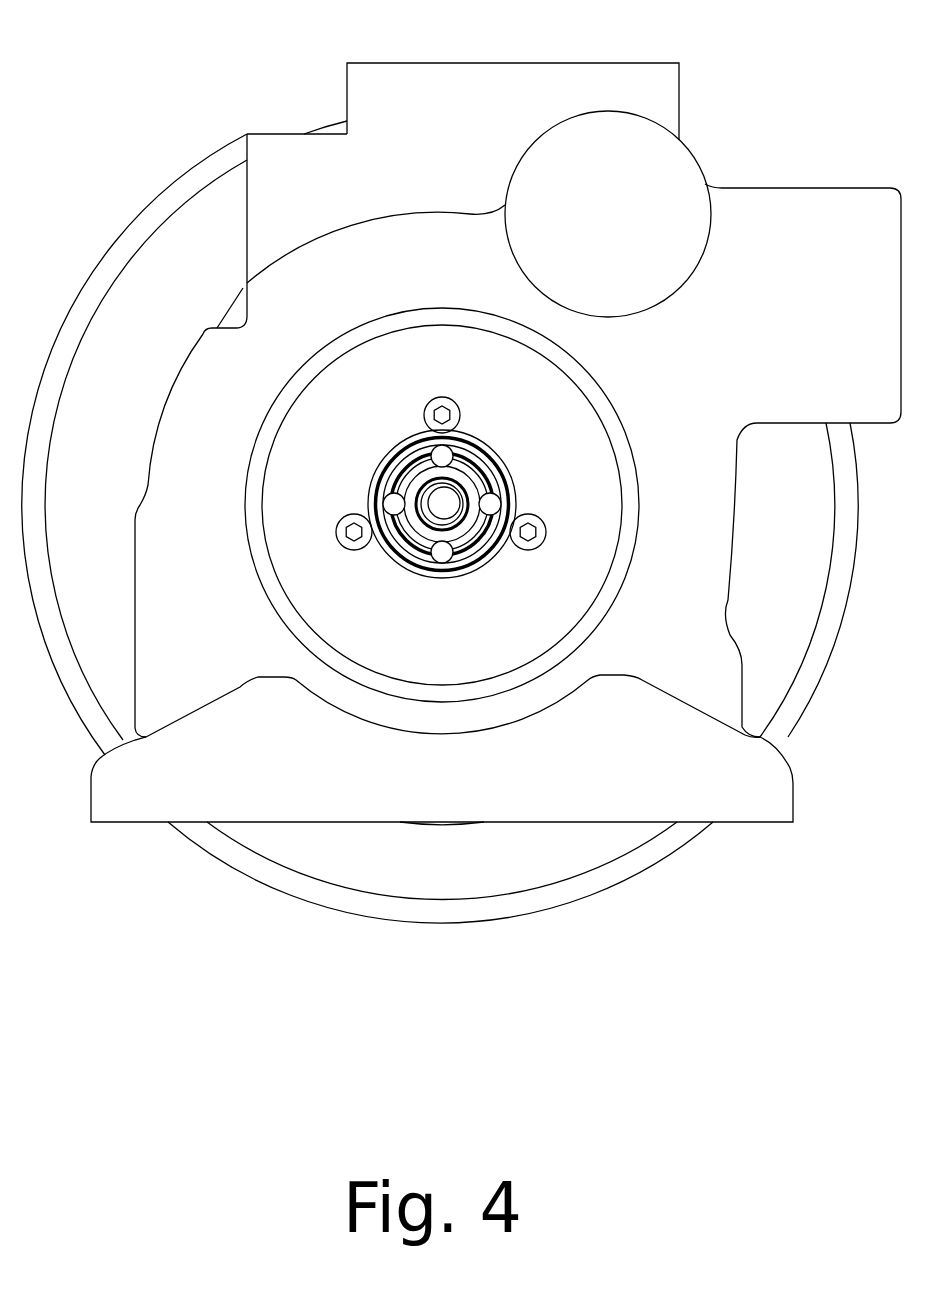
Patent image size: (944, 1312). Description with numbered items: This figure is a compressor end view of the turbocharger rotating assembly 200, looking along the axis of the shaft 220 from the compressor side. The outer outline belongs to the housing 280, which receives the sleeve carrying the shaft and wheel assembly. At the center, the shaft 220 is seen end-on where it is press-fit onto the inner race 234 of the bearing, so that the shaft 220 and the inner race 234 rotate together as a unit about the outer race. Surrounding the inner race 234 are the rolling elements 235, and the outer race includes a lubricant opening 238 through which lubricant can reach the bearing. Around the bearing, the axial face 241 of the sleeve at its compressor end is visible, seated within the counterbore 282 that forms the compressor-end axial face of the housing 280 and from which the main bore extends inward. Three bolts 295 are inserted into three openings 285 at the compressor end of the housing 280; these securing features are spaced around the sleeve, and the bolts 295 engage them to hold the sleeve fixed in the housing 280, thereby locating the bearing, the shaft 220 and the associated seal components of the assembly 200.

The turbocharger rotating assembly 200 is at (213, 33).
The housing 280 is at (220, 615).
The shaft 220 is at (438, 501).
The axial face 241 is at (490, 450).
The counterbore 282 is at (495, 558).
The lubricant opening 238 is at (405, 557).
The inner race 234 is at (427, 535).
The rolling elements 235 is at (442, 553).
The securing features 285 is at (458, 414).
The bolts 295 is at (428, 407).